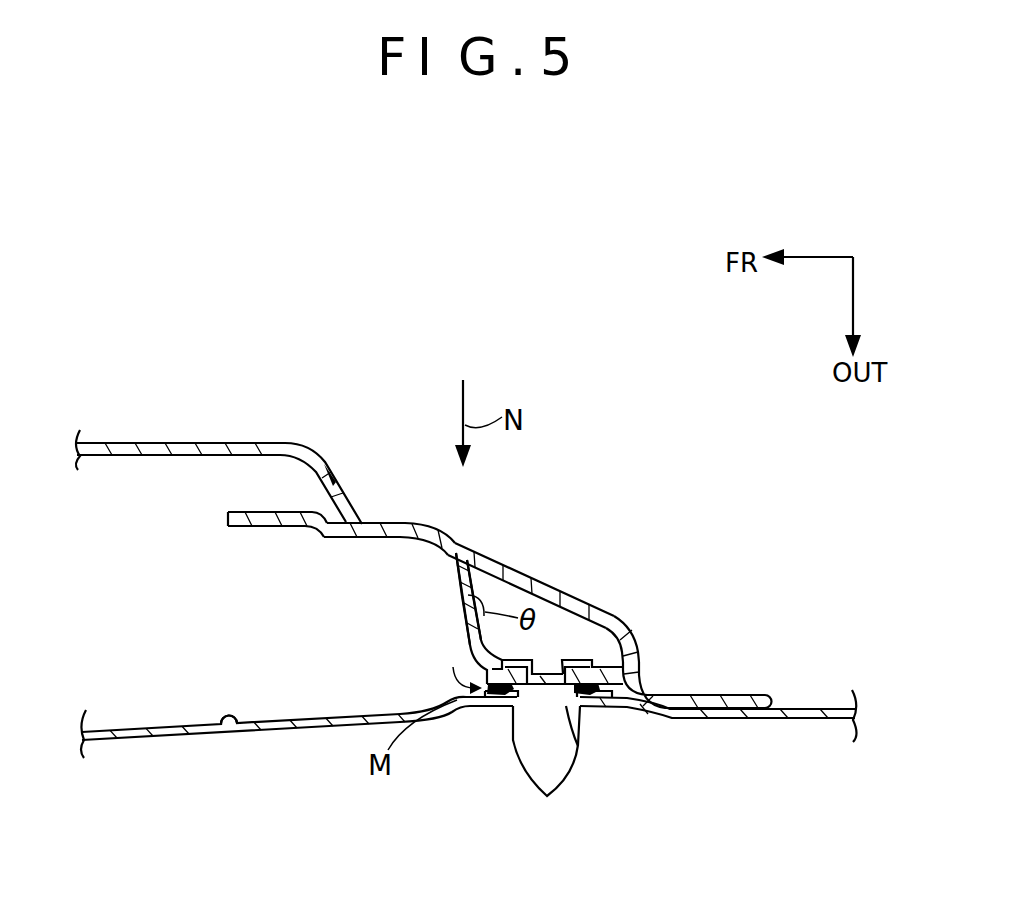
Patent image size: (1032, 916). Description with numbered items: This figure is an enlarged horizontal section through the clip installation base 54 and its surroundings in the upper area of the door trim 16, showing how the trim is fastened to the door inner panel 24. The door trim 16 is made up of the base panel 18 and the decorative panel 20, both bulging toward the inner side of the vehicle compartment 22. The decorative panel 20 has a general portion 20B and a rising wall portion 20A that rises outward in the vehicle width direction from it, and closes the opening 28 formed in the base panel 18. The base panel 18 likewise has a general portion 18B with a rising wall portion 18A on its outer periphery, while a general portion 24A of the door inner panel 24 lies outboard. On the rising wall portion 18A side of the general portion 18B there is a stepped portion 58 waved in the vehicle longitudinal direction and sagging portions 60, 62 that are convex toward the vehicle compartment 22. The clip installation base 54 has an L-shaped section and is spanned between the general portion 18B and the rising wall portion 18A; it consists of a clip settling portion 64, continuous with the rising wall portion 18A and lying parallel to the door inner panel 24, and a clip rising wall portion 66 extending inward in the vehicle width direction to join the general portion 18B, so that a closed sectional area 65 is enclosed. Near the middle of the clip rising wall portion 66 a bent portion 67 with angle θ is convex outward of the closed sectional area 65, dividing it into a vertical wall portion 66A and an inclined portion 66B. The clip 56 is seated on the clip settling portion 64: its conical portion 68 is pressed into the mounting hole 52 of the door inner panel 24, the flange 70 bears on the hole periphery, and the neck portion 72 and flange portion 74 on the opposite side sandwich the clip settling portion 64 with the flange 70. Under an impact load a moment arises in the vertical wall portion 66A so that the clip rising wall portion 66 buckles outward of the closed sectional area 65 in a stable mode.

The door trim 16 is at (700, 425).
The base panel 18 is at (610, 565).
The rising wall portion 18A is at (636, 648).
The general portion 18B is at (362, 525).
The decorative panel 20 is at (277, 443).
The rising wall portion 20A is at (346, 508).
The general portion 20B is at (172, 441).
The vehicle compartment 22 is at (250, 346).
The door inner panel 24 is at (795, 711).
The general portion 24A is at (240, 727).
The opening 28 is at (228, 517).
The mounting hole 52 is at (578, 720).
The clip installation base 54 is at (463, 642).
The clip 56 is at (572, 797).
The stepped portion 58 is at (537, 574).
The sagging portion 60 is at (458, 542).
The sagging portion 62 is at (619, 621).
The clip settling portion 64 is at (493, 707).
The closed sectional area 65 is at (474, 632).
The clip rising wall portion 66 is at (368, 619).
The vertical wall portion 66A is at (470, 655).
The inclined portion 66B is at (458, 587).
The bent portion 67 is at (461, 612).
The conical portion 68 is at (535, 780).
The flange 70 is at (610, 712).
The neck portion 72 is at (540, 657).
The flange portion 74 is at (571, 659).